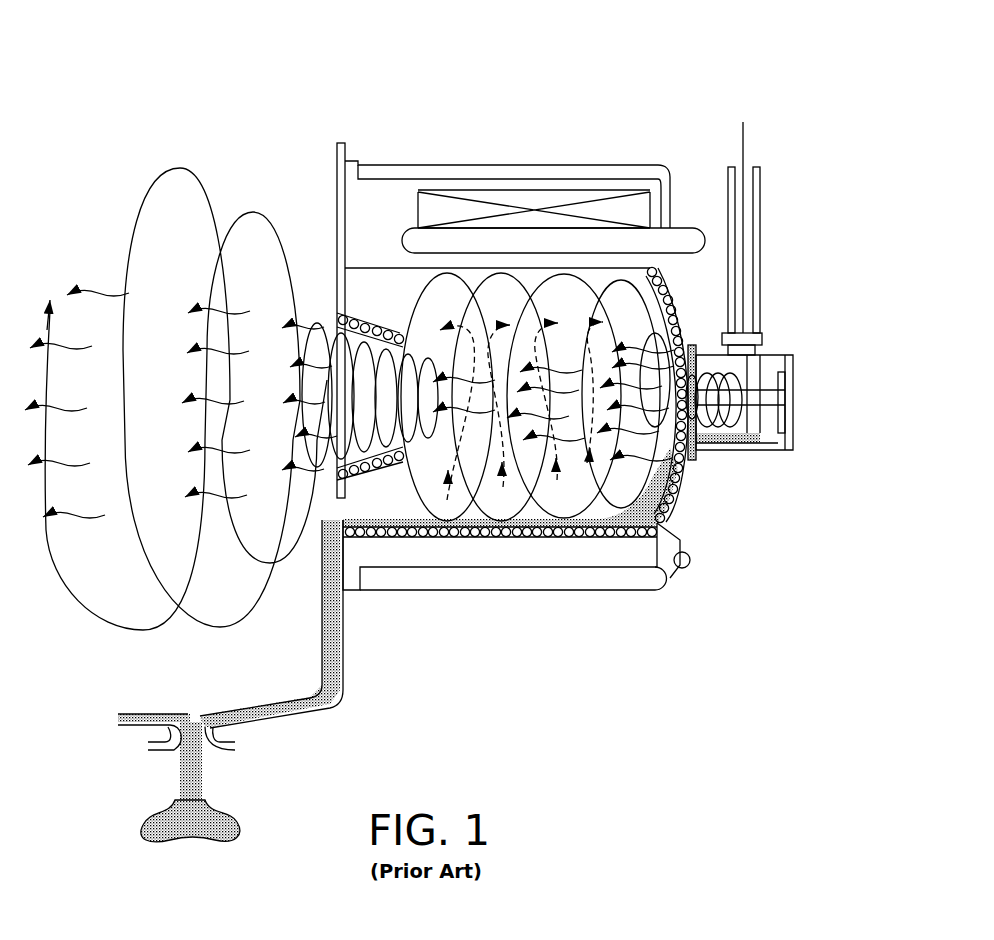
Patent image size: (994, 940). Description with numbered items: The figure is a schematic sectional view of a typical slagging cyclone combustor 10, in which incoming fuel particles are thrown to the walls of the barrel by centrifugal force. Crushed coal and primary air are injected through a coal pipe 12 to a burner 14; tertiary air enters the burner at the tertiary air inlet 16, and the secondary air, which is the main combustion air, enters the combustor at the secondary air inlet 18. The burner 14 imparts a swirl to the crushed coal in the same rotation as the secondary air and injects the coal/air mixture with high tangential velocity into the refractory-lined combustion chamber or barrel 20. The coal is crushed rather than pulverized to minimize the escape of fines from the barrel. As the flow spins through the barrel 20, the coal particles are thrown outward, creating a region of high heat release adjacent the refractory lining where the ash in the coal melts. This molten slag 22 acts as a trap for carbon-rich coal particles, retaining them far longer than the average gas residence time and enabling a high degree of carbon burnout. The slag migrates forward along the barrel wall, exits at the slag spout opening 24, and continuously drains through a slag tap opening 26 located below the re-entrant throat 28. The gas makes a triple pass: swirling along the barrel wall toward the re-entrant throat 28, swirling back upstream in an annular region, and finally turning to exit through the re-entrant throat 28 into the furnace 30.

The cyclone combustor 10 is at (655, 104).
The coal pipe 12 is at (757, 195).
The burner 14 is at (793, 407).
The tertiary air inlet 16 is at (764, 400).
The secondary air inlet 18 is at (432, 208).
The combustion chamber or barrel 20 is at (553, 540).
The molten slag 22 is at (667, 514).
The slag spout opening 24 is at (340, 505).
The slag tap opening 26 is at (190, 720).
The re-entrant throat 28 is at (377, 312).
The furnace 30 is at (110, 266).